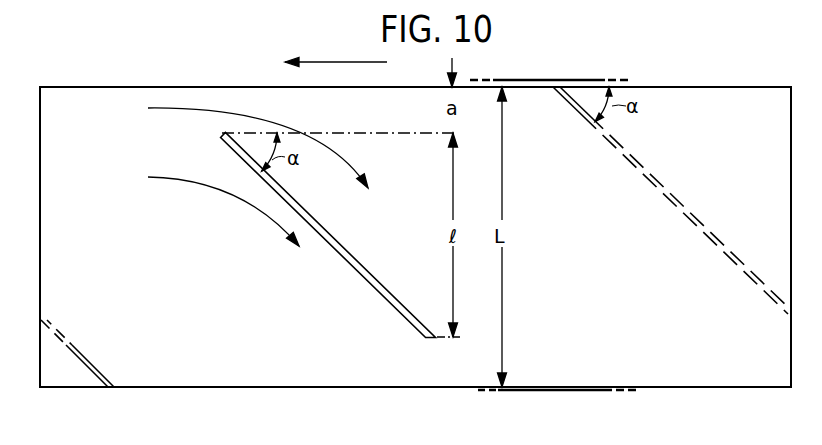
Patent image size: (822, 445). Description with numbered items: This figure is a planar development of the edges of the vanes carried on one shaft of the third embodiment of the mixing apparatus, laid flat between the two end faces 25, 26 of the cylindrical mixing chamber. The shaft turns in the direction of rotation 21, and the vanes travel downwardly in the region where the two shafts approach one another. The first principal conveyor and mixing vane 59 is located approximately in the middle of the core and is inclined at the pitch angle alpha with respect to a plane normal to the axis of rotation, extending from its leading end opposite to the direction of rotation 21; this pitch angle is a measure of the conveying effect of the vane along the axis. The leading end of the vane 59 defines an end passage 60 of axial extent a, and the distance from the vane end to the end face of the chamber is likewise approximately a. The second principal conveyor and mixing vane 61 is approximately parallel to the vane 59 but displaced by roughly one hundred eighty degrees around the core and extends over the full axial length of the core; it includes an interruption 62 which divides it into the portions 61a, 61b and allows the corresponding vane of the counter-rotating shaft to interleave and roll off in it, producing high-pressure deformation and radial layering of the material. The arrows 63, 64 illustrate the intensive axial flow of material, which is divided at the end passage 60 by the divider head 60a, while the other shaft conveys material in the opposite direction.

The direction of rotation 21 is at (344, 62).
The end face 25 is at (543, 80).
The end face 26 is at (578, 392).
The first principal conveyor and mixing vane 59 is at (357, 256).
The end passage 60 is at (222, 103).
The divider head 60a is at (221, 133).
The second principal conveyor and mixing vane 61 is at (672, 207).
The vane portion 61a is at (584, 114).
The vane portion 61b is at (85, 357).
The interruption 62 is at (669, 194).
The arrow 63 is at (271, 221).
The arrow 64 is at (343, 159).